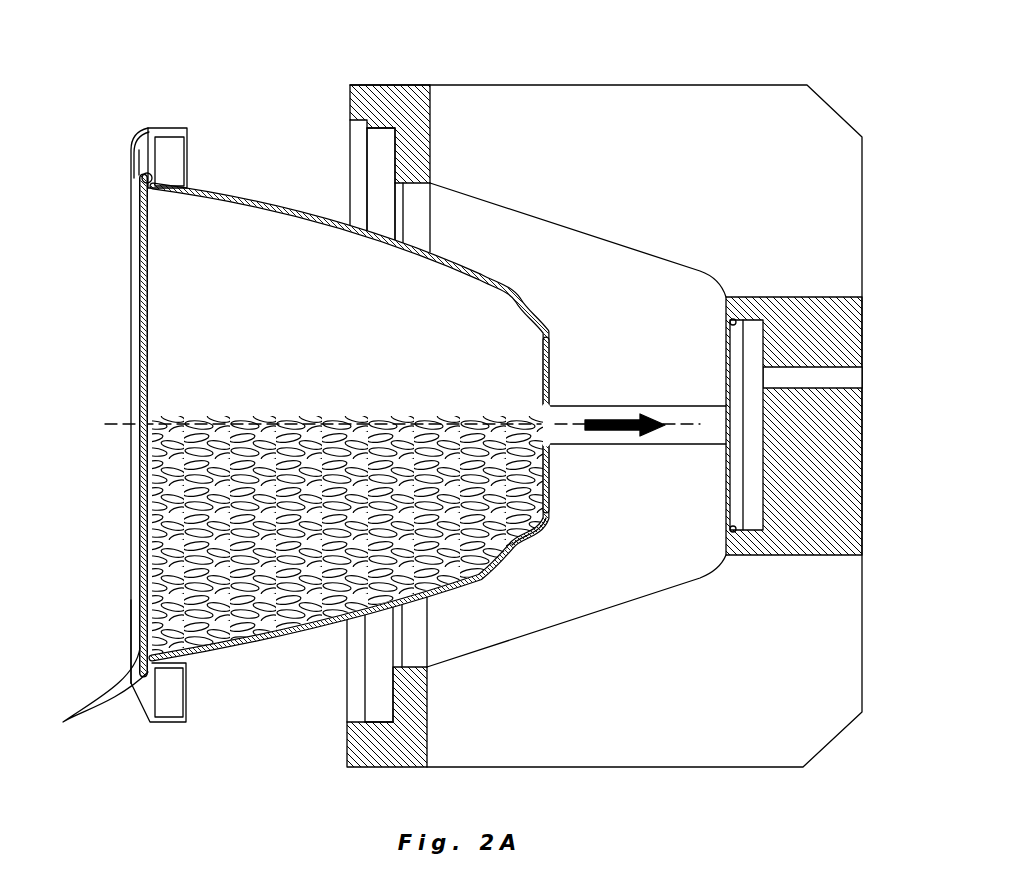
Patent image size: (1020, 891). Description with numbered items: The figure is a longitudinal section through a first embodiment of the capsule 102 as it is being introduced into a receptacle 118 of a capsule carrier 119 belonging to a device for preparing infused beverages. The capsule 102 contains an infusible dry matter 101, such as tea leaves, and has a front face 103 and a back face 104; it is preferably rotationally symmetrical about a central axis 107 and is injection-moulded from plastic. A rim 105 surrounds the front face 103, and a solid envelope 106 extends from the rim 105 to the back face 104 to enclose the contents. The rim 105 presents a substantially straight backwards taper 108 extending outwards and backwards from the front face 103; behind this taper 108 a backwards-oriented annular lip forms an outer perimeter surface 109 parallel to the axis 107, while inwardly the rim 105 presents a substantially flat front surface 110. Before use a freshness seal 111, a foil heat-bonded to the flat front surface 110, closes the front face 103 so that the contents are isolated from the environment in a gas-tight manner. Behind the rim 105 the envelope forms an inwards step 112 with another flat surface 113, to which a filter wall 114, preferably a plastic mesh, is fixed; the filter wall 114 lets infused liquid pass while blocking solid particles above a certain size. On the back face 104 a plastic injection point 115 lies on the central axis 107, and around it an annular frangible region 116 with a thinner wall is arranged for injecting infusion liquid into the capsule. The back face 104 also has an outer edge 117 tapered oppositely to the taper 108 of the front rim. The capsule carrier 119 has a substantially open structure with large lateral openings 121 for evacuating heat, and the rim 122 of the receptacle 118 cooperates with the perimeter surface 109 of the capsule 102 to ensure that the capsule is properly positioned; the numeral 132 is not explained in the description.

The infusible dry matter 101 is at (467, 567).
The capsule 102 is at (198, 80).
The front face 103 is at (345, 394).
The back face 104 is at (603, 358).
The rim 105 is at (156, 160).
The solid envelope 106 is at (273, 640).
The central axis 107 is at (110, 428).
The backwards taper 108 is at (137, 142).
The outer perimeter surface 109 is at (168, 127).
The flat front surface 110 is at (140, 153).
The freshness seal 111 is at (128, 672).
The inwards step 112 is at (153, 177).
The flat surface 113 is at (122, 671).
The filter wall 114 is at (138, 303).
The plastic injection point 115 is at (552, 427).
The annular frangible region 116 is at (552, 377).
The outer edge 117 is at (540, 527).
The receptacle 118 is at (538, 245).
The capsule carrier 119 is at (388, 106).
The lateral openings 121 is at (690, 183).
The rim 122 is at (390, 130).
The outlet channel 132 is at (723, 517).